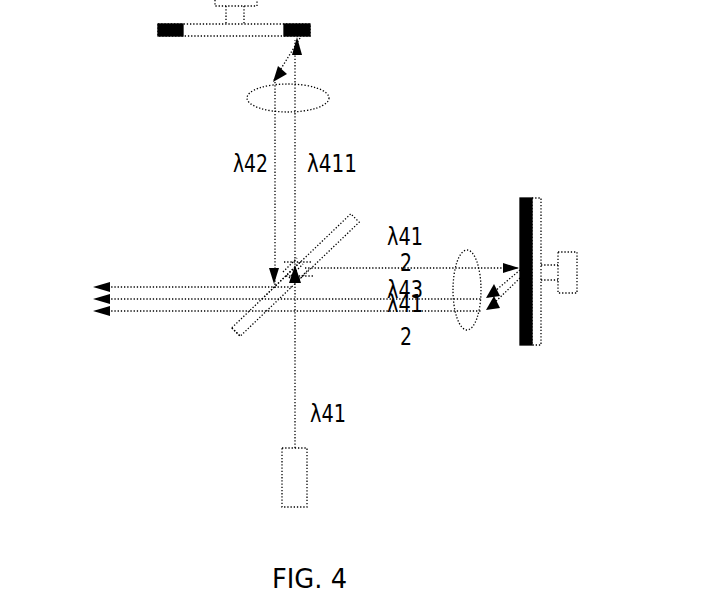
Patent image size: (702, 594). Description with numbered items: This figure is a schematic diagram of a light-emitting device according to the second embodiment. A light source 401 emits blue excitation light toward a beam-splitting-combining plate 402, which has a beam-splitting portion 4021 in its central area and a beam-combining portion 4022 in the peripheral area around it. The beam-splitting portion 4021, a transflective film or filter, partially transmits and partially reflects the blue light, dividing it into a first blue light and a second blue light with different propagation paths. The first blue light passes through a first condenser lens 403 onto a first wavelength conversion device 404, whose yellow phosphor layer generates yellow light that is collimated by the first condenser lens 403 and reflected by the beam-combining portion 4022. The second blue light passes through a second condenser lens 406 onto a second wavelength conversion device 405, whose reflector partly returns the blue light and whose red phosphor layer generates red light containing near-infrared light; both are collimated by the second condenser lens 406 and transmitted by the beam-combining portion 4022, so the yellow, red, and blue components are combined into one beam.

The light source 401 is at (288, 476).
The beam-splitting-combining plate 402 is at (345, 226).
The beam-splitting portion 4021 is at (283, 270).
The beam-combining portion 4022 is at (238, 332).
The first condenser lens 403 is at (252, 100).
The first wavelength conversion device 404 is at (165, 37).
The second wavelength conversion device 405 is at (531, 348).
The second condenser lens 406 is at (467, 330).